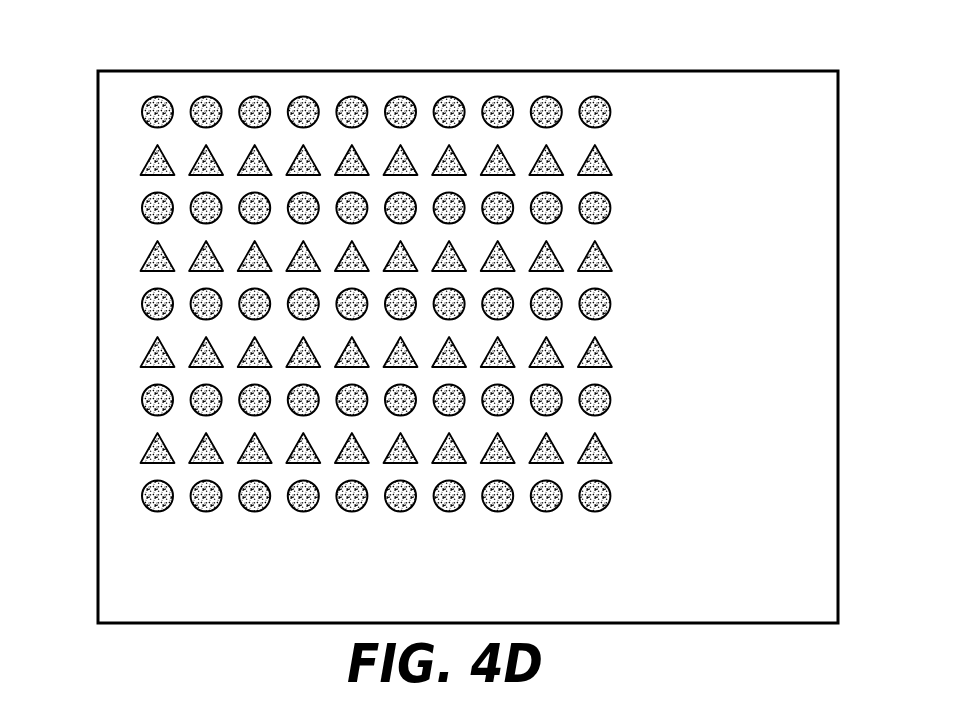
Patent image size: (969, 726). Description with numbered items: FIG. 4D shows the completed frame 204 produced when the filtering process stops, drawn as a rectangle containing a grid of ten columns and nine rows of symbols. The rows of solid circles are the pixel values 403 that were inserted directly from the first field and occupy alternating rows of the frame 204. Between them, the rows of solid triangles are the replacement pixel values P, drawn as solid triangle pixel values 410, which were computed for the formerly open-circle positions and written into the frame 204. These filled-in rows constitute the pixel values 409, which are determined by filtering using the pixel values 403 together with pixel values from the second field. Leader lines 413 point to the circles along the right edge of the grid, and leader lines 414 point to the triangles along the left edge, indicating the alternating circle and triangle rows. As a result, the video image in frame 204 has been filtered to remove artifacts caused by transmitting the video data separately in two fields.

The frame 204 is at (817, 380).
The pixel values 403 is at (305, 92).
The pixel values 409 is at (507, 148).
The solid triangle pixel values 410 is at (437, 253).
The column of first type elements 413 is at (617, 305).
The column of second type elements 414 is at (143, 157).